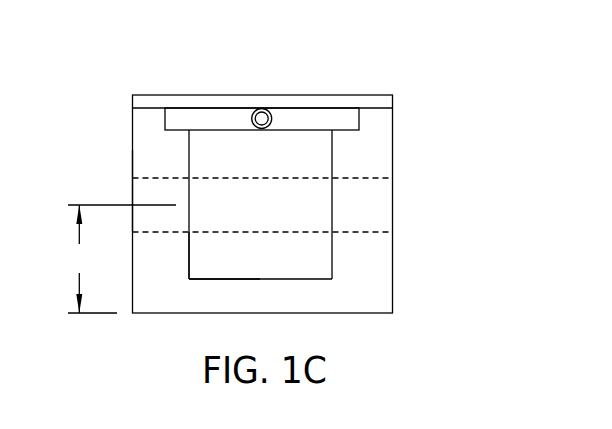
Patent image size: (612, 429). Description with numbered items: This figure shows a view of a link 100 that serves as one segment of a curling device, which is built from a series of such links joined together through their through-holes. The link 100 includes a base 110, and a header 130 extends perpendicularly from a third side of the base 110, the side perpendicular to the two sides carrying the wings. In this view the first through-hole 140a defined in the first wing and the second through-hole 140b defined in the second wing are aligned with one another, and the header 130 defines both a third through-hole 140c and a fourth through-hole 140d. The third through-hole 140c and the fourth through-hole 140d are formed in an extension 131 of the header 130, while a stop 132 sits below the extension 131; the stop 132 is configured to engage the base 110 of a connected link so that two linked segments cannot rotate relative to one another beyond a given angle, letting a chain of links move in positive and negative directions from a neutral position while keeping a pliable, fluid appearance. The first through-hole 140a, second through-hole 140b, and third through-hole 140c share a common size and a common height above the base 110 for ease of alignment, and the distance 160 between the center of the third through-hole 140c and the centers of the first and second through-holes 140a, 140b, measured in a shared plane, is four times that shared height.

The link 100 is at (427, 80).
The base 110 is at (352, 314).
The header 130 is at (360, 270).
The extension 131 is at (202, 263).
The stop 132 is at (203, 295).
The first through-hole 140a is at (373, 202).
The second through-hole 140b is at (143, 190).
The third through-hole 140c is at (302, 213).
The fourth through-hole 140d is at (260, 108).
The distance 160 is at (119, 259).